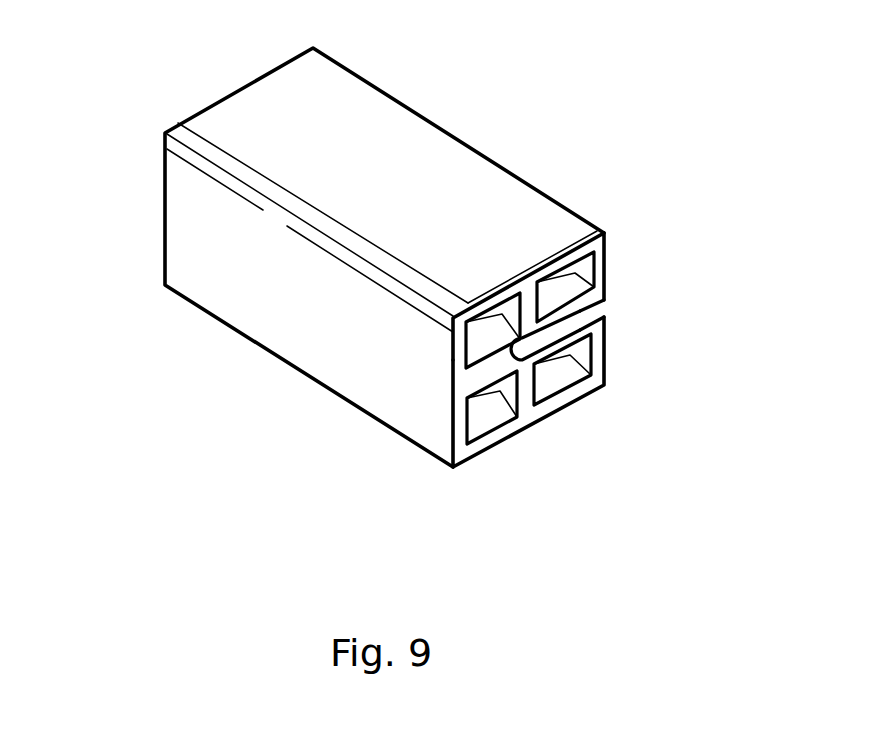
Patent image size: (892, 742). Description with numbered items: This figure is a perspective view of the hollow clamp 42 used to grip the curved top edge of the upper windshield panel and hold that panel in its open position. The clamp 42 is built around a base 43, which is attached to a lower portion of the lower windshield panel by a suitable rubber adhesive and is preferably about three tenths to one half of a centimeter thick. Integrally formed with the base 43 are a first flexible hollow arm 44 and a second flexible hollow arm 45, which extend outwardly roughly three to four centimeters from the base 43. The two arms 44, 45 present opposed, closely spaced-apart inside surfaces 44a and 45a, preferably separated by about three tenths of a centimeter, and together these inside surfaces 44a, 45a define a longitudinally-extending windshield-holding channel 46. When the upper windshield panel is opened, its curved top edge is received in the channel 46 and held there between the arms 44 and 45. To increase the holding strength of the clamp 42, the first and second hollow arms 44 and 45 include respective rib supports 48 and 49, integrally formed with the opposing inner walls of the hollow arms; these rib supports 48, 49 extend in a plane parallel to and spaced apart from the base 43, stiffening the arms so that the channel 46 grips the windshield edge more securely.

The clamp 42 is at (474, 140).
The base 43 is at (228, 254).
The first flexible hollow arm 44 is at (613, 255).
The inside surface of first arm 44a is at (610, 303).
The second flexible hollow arm 45 is at (606, 349).
The inside surface of second arm 45a is at (612, 315).
The windshield-holding channel 46 is at (514, 388).
The rib support 48 is at (510, 350).
The rib support 49 is at (563, 395).